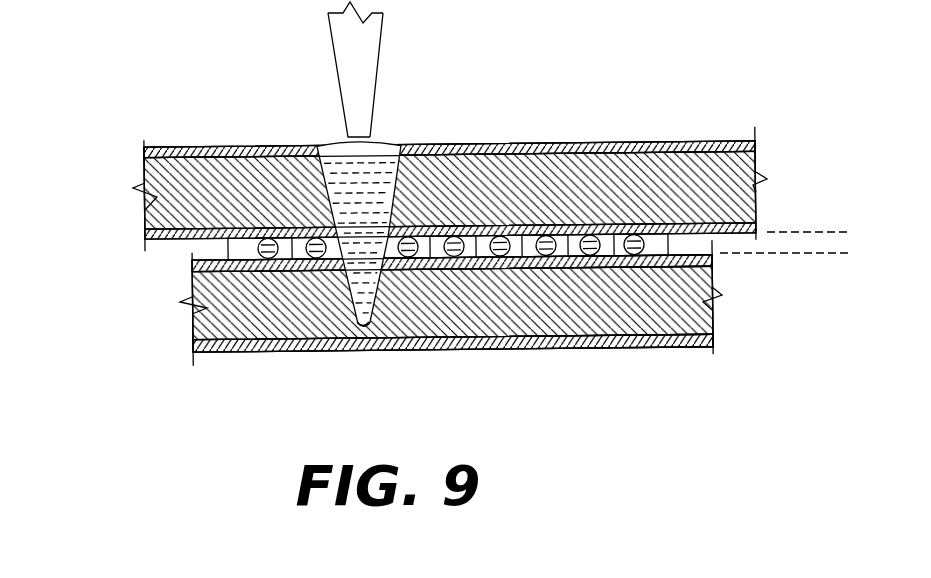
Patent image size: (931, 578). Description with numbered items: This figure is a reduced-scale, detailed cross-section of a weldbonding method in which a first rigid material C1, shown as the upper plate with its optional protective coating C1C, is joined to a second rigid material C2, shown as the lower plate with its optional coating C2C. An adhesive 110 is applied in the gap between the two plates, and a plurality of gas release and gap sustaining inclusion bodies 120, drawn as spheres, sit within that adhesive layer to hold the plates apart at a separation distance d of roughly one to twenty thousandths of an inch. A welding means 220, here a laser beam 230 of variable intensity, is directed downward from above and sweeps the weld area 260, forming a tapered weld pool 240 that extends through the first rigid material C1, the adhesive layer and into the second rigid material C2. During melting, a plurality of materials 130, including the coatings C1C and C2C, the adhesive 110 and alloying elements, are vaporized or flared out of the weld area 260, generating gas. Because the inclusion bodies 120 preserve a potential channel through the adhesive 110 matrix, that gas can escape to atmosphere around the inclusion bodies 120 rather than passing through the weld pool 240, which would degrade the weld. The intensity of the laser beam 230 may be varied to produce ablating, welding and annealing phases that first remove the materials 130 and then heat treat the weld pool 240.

The adhesive 110 is at (670, 244).
The gas release and gap sustaining inclusion bodies 120 is at (618, 257).
The plurality of materials 130 is at (388, 360).
The welding means 220 is at (355, 68).
The laser beam 230 is at (383, 13).
The weld pool 240 is at (345, 138).
The weld area 260 is at (382, 72).
The first rigid material C1 is at (256, 160).
The second rigid material C2 is at (360, 336).
The coating of first rigid material C1C is at (145, 233).
The coating of second rigid material C2C is at (193, 348).
The separation distance d is at (819, 277).